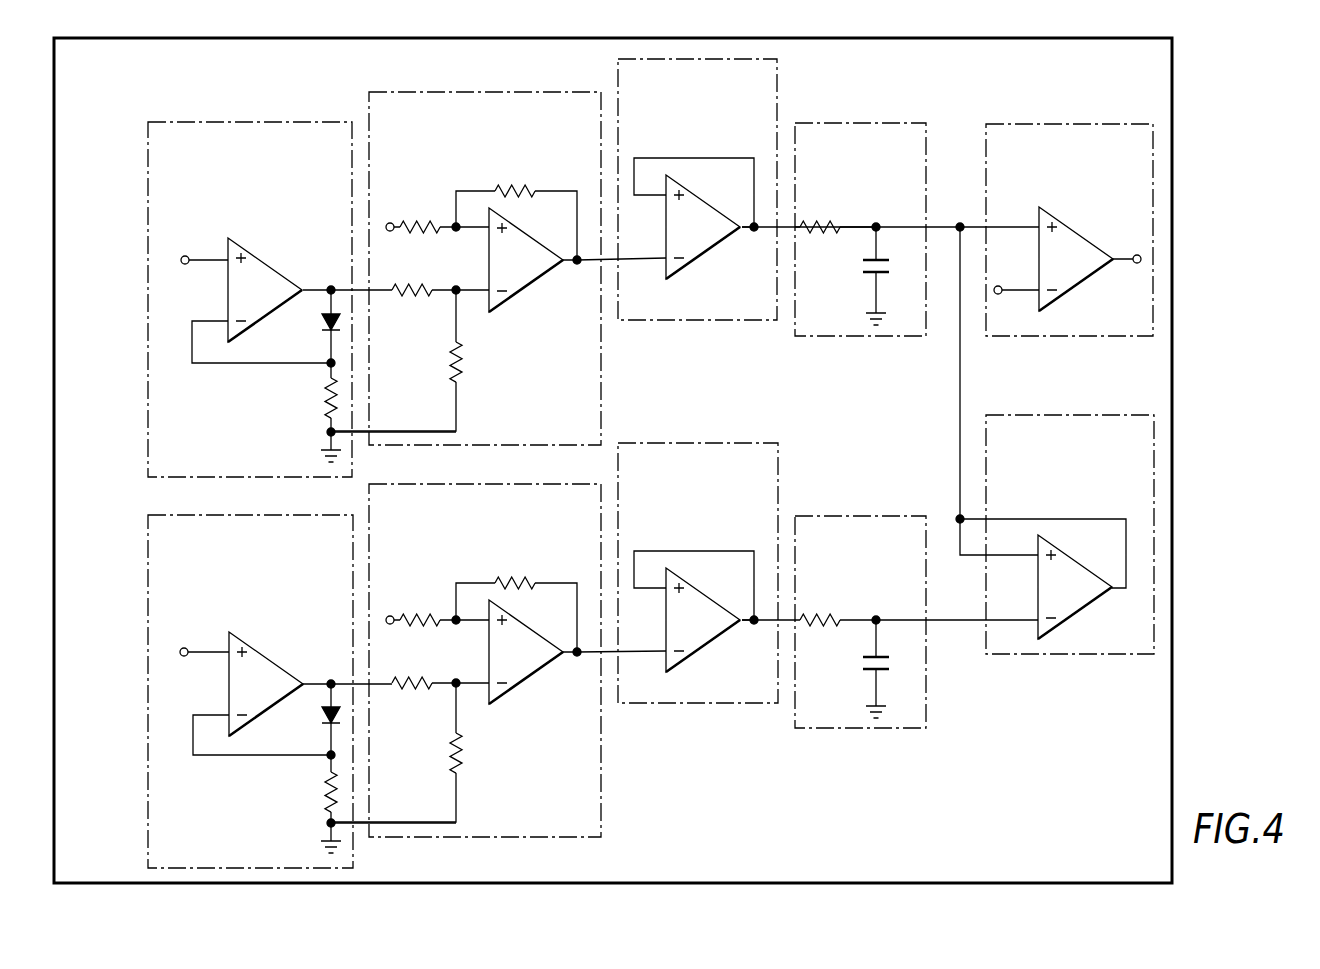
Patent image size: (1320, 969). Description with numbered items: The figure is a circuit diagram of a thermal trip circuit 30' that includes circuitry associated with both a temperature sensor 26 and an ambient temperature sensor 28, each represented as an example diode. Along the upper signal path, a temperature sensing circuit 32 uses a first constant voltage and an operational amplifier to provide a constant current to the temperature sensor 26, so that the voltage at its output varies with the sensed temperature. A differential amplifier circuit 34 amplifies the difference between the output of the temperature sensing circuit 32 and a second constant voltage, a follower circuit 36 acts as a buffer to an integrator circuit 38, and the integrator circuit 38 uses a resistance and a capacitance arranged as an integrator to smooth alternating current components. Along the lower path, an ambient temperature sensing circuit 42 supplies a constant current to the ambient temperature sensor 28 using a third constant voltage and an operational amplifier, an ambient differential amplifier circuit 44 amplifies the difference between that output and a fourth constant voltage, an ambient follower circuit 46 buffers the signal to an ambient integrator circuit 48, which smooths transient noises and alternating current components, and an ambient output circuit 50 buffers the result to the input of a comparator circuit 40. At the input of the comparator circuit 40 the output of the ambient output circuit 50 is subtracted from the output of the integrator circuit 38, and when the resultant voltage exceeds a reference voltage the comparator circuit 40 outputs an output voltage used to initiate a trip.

The thermal trip circuit 30' is at (640, 460).
The temperature sensor 26 is at (322, 319).
The ambient temperature sensor 28 is at (322, 712).
The temperature sensing circuit 32 is at (220, 299).
The differential amplifier circuit 34 is at (368, 100).
The follower circuit 36 is at (618, 73).
The integrator circuit 38 is at (872, 123).
The comparator circuit 40 is at (1072, 124).
The ambient temperature sensing circuit 42 is at (217, 691).
The ambient differential amplifier circuit 44 is at (601, 752).
The ambient follower circuit 46 is at (708, 703).
The ambient integrator circuit 48 is at (868, 728).
The ambient output circuit 50 is at (1065, 654).